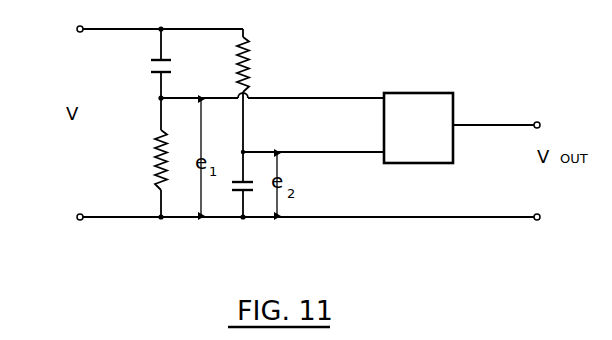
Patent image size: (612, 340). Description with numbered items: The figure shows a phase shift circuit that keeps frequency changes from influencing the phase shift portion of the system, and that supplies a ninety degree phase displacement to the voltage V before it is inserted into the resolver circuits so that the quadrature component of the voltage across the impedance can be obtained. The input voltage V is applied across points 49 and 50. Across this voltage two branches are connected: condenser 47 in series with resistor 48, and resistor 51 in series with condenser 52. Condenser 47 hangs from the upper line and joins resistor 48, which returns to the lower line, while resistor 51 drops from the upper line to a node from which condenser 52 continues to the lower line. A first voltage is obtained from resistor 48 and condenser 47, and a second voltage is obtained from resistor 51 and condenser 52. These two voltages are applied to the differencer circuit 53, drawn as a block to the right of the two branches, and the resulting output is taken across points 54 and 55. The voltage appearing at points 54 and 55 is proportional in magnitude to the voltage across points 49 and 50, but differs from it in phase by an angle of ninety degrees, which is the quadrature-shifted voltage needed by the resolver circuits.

The condenser 47 is at (150, 66).
The resistor 48 is at (156, 150).
The input point 49 is at (77, 27).
The input point 50 is at (77, 219).
The resistor 51 is at (256, 62).
The condenser 52 is at (252, 187).
The differencer circuit 53 is at (412, 93).
The output point 54 is at (550, 112).
The output point 55 is at (540, 217).